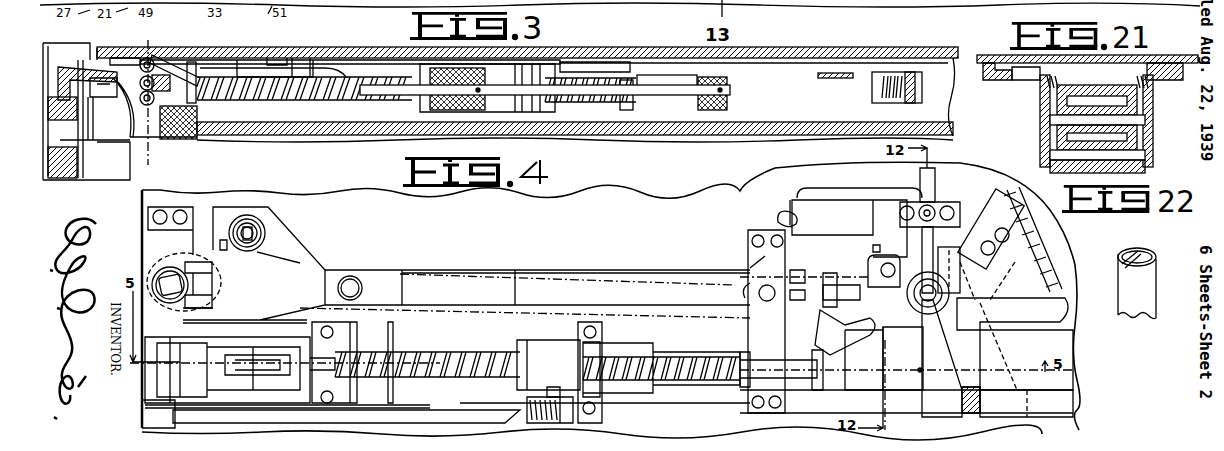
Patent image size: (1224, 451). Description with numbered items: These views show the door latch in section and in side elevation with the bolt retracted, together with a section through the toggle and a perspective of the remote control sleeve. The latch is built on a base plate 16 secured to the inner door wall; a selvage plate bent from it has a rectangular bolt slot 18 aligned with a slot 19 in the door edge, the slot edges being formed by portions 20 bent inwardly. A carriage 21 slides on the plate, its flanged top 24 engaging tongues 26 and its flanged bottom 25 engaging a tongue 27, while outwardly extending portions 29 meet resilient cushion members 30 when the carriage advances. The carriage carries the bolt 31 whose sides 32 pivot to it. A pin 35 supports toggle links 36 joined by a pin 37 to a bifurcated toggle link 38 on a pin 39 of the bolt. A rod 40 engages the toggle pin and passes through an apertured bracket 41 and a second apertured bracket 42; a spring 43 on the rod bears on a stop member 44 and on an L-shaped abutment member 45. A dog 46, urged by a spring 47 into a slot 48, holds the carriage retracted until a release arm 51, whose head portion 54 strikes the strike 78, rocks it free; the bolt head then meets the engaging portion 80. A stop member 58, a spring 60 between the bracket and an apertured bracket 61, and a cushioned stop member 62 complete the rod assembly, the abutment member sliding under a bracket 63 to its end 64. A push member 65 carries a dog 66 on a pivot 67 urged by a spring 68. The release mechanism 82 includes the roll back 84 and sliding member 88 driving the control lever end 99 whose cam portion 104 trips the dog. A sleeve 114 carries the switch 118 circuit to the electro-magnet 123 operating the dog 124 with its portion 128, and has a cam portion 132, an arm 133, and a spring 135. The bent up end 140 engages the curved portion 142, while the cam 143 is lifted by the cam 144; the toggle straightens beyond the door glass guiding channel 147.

In FIG. 3, the base plate 16 is at (335, 55).
In FIG. 4, the base plate 16 is at (700, 403).
In FIG. 3, the bolt opening or slot 18 is at (100, 45).
In FIG. 3, the slot in the door edge 19 is at (80, 39).
In FIG. 3, the inwardly bent portions 20 is at (125, 88).
In FIG. 3, the carriage 21 is at (305, 43).
In FIG. 21, the carriage 21 is at (1034, 149).
In FIG. 4, the carriage 21 is at (307, 335).
In FIG. 21, the flanged top 24 is at (1155, 105).
In FIG. 21, the flanged bottom 25 is at (1040, 110).
In FIG. 21, the tongues 26 is at (1185, 68).
In FIG. 21, the tongue 27 is at (1010, 82).
In FIG. 4, the outwardly extending portions 29 is at (394, 330).
In FIG. 4, the resilient cushion members 30 is at (352, 330).
In FIG. 3, the bolt 31 is at (128, 110).
In FIG. 4, the bolt 31 is at (178, 331).
In FIG. 21, the bolt sides 32 is at (1040, 128).
In FIG. 4, the bolt sides 32 is at (385, 281).
In FIG. 3, the pin 35 is at (145, 58).
In FIG. 21, the pin 35 is at (1150, 85).
In FIG. 3, the toggle links 36 is at (170, 58).
In FIG. 21, the toggle links 36 is at (1145, 120).
In FIG. 3, the pin 37 is at (131, 121).
In FIG. 21, the pin 37 is at (1150, 135).
In FIG. 3, the bifurcated toggle link 38 is at (130, 141).
In FIG. 21, the bifurcated toggle link 38 is at (1150, 172).
In FIG. 21, the pin 39 is at (1050, 157).
In FIG. 3, the rod 40 is at (732, 92).
In FIG. 21, the rod 40 is at (1075, 168).
In FIG. 4, the rod 40 is at (452, 348).
In FIG. 4, the apertured bracket 41 is at (602, 343).
In FIG. 3, the second apertured bracket 42 is at (700, 106).
In FIG. 4, the second apertured bracket 42 is at (748, 340).
In FIG. 3, the spring 43 is at (345, 98).
In FIG. 4, the spring 43 is at (417, 348).
In FIG. 3, the stop member 44 is at (183, 103).
In FIG. 3, the L-shaped abutment member 45 is at (420, 100).
In FIG. 4, the L-shaped abutment member 45 is at (517, 345).
In FIG. 3, the dog 46 is at (195, 62).
In FIG. 21, the dog 46 is at (1125, 70).
In FIG. 3, the spring 47 is at (197, 75).
In FIG. 21, the spring 47 is at (1040, 85).
In FIG. 3, the slot 48 is at (238, 47).
In FIG. 3, the release arm 51 is at (330, 66).
In FIG. 21, the release arm 51 is at (1000, 76).
In FIG. 4, the release arm 51 is at (428, 410).
In FIG. 4, the enlarged head portion 54 is at (162, 405).
In FIG. 3, the stop member 58 is at (458, 110).
In FIG. 4, the stop member 58 is at (555, 340).
In FIG. 3, the spring 60 is at (565, 102).
In FIG. 4, the spring 60 is at (688, 352).
In FIG. 3, the apertured bracket 61 is at (634, 99).
In FIG. 3, the resilient cushioned stop member 62 is at (708, 104).
In FIG. 4, the resilient cushioned stop member 62 is at (825, 362).
In FIG. 3, the bracket 63 is at (838, 79).
In FIG. 3, the rearward end 64 is at (870, 72).
In FIG. 3, the push member 65 is at (950, 58).
In FIG. 4, the push member 65 is at (1012, 360).
In FIG. 3, the dog 66 is at (878, 101).
In FIG. 4, the dog 66 is at (940, 410).
In FIG. 3, the pivot 67 is at (922, 85).
In FIG. 3, the spring 68 is at (903, 101).
In FIG. 3, the strike 78 is at (48, 62).
In FIG. 3, the resiliently faced engaging portion 80 is at (48, 100).
In FIG. 4, the release mechanism 82 is at (560, 286).
In FIG. 4, the roll back 84 is at (193, 254).
In FIG. 4, the sliding member 88 is at (225, 222).
In FIG. 4, the end of the control lever 99 is at (722, 281).
In FIG. 4, the cam portion 104 is at (944, 305).
In FIG. 22, the sleeve 114 is at (1140, 285).
In FIG. 4, the electrical switch 118 is at (936, 200).
In FIG. 4, the electro-magnet 123 is at (786, 210).
In FIG. 4, the dog 124 is at (868, 260).
In FIG. 4, the portion 128 is at (995, 285).
In FIG. 22, the cam portion 132 is at (1120, 267).
In FIG. 4, the arm 133 is at (1050, 312).
In FIG. 4, the spring 135 is at (1045, 247).
In FIG. 4, the bent up end 140 is at (824, 293).
In FIG. 4, the curved portion 142 is at (820, 272).
In FIG. 4, the cam 143 is at (825, 327).
In FIG. 4, the cam 144 is at (845, 347).
In FIG. 3, the door glass guiding channel 147 is at (168, 140).